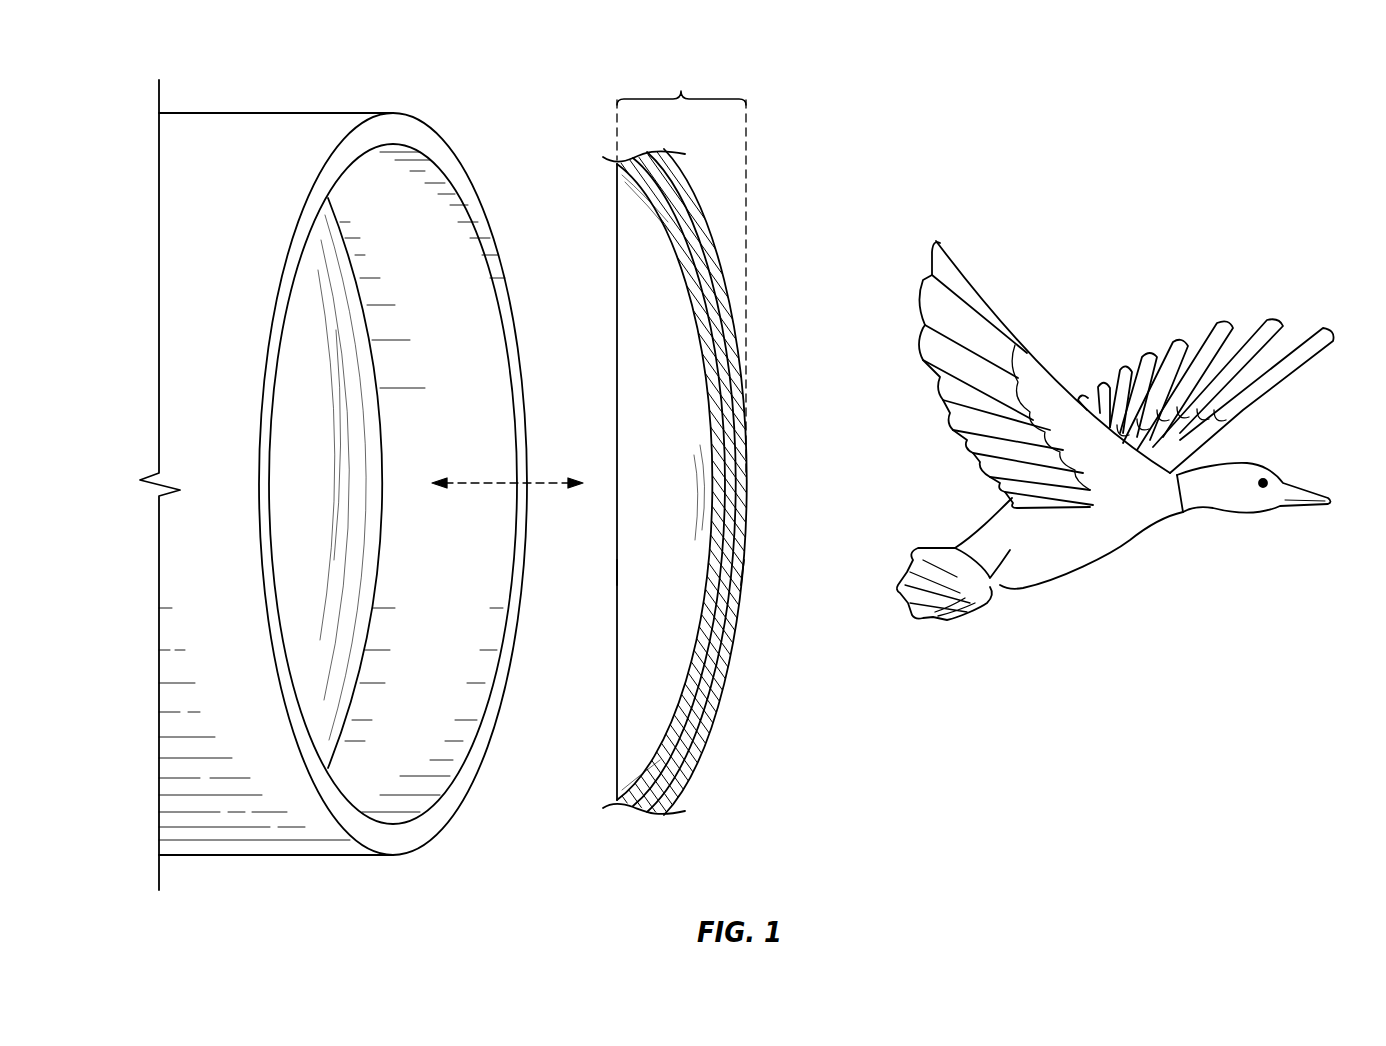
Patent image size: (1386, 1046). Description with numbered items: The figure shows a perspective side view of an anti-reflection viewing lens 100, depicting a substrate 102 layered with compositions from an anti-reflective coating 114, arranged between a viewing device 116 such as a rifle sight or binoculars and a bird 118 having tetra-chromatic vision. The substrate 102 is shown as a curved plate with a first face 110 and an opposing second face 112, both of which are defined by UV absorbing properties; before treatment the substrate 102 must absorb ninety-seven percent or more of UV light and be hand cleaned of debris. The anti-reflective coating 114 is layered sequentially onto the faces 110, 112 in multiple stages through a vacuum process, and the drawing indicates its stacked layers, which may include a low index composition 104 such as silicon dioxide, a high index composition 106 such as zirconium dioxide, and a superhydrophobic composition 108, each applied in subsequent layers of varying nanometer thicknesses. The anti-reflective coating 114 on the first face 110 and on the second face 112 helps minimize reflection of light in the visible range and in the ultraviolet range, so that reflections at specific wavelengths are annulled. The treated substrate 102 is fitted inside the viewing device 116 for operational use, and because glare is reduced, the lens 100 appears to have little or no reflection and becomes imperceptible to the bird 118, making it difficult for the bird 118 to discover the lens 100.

The viewing lens 100 is at (718, 472).
The substrate 102 is at (749, 463).
The low index composition 104 is at (730, 503).
The high index composition 106 is at (722, 545).
The superhydrophobic composition 108 is at (670, 471).
The first face 110 is at (617, 572).
The second face 112 is at (749, 570).
The anti-reflective coating 114 is at (681, 267).
The viewing device 116 is at (337, 495).
The bird 118 is at (1133, 330).